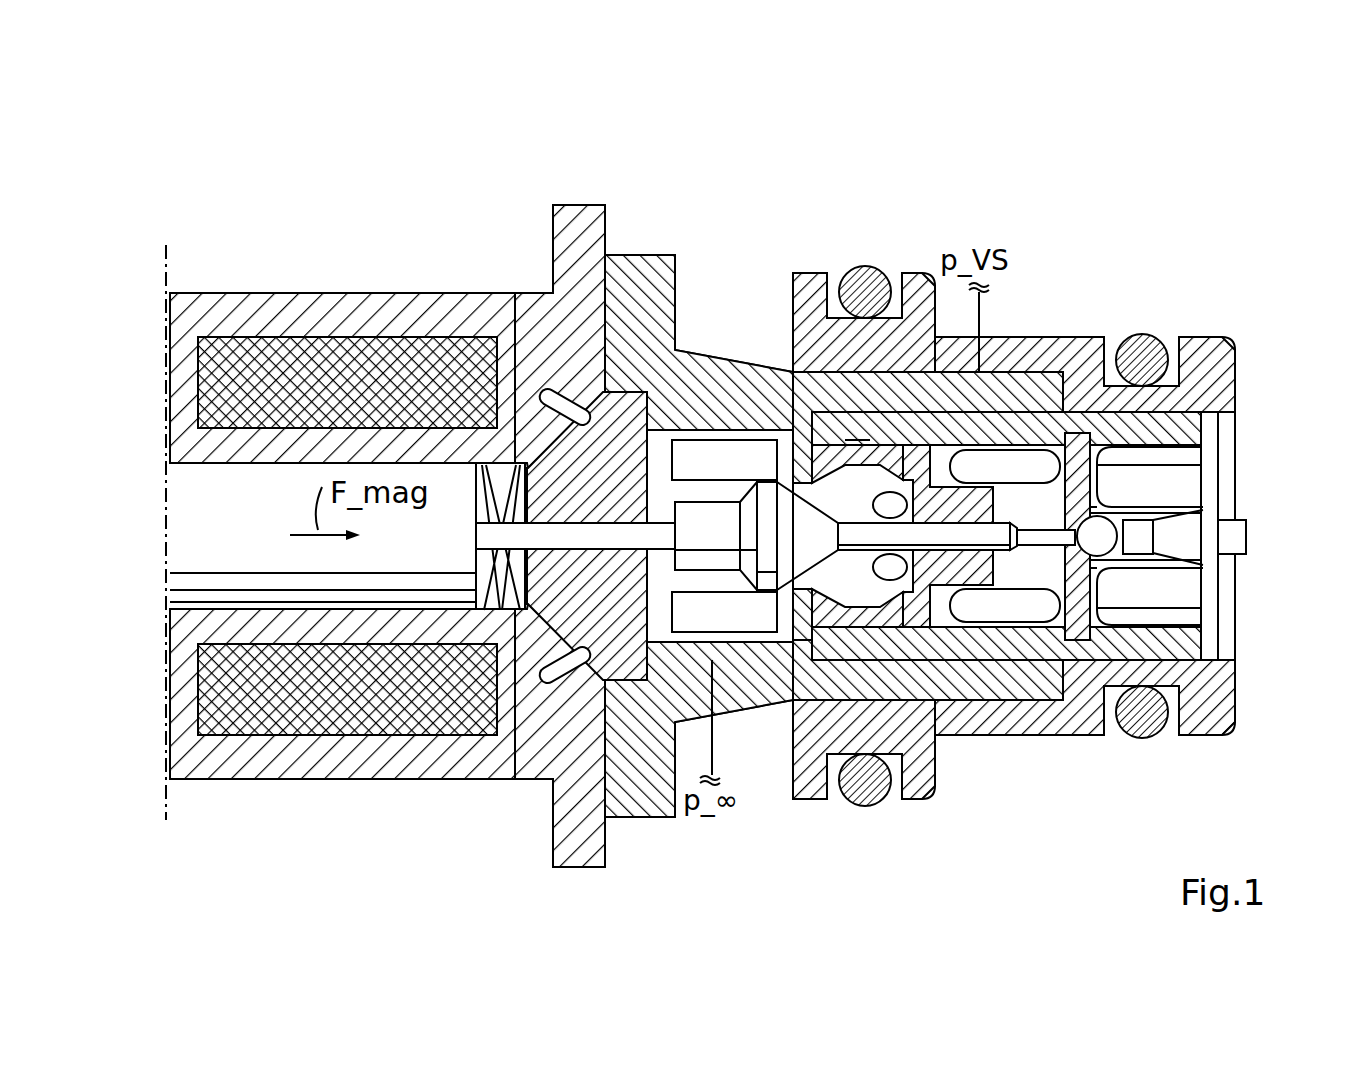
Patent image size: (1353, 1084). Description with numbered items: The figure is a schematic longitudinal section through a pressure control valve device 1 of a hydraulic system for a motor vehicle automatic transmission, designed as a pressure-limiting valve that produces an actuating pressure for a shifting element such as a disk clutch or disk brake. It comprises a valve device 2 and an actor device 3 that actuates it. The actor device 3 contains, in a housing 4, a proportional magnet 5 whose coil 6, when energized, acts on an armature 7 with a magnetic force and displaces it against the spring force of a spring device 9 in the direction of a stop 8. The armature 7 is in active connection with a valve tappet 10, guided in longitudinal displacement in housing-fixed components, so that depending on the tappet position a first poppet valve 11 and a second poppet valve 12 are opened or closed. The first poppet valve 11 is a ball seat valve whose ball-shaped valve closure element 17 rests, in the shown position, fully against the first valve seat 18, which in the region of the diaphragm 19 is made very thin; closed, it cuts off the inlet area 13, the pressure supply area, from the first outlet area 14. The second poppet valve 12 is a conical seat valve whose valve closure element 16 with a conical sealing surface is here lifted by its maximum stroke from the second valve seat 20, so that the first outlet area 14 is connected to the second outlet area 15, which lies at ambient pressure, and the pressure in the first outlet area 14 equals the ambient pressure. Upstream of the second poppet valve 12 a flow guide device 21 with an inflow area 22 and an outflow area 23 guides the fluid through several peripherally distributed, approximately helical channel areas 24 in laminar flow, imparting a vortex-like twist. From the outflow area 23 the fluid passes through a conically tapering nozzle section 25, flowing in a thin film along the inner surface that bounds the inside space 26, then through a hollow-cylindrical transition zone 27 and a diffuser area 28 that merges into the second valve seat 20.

The pressure control valve device 1 is at (584, 172).
The valve device 2 is at (1046, 256).
The actor device 3 is at (342, 464).
The housing 4 is at (203, 318).
The proportional magnet 5 is at (417, 322).
The coil 6 is at (272, 380).
The armature 7 is at (210, 517).
The stop 8 is at (512, 470).
The spring device 9 is at (513, 530).
The valve tappet 10 is at (655, 532).
The first poppet valve 11 is at (1068, 622).
The second poppet valve 12 is at (756, 672).
The inlet area 13 is at (1160, 487).
The first outlet area 14 is at (1048, 468).
The second outlet area 15 is at (720, 467).
The valve closure element 16 is at (820, 550).
The valve closure element 17 is at (1093, 556).
The first valve seat 18 is at (1168, 509).
The diaphragm 19 is at (1108, 501).
The second valve seat 20 is at (798, 372).
The flow guide device 21 is at (854, 440).
The inflow area 22 is at (960, 604).
The outflow area 23 is at (854, 428).
The channel areas 24 is at (893, 440).
The nozzle section 25 is at (866, 580).
The inside space 26 is at (866, 505).
The transition zone 27 is at (800, 660).
The diffuser area 28 is at (797, 645).